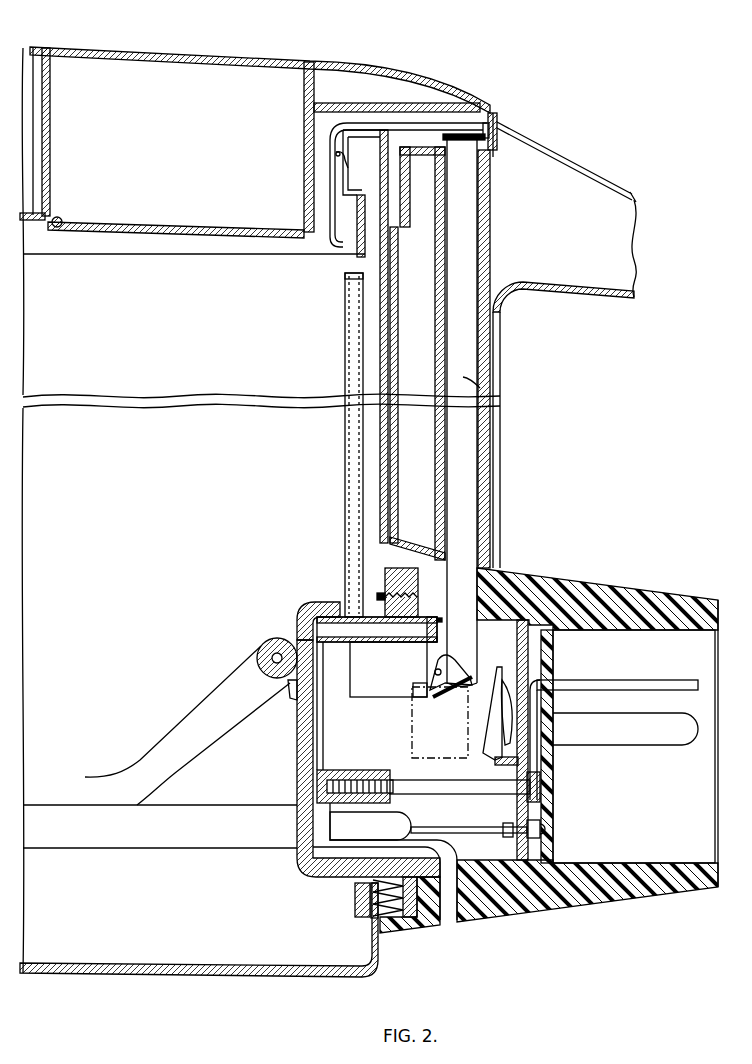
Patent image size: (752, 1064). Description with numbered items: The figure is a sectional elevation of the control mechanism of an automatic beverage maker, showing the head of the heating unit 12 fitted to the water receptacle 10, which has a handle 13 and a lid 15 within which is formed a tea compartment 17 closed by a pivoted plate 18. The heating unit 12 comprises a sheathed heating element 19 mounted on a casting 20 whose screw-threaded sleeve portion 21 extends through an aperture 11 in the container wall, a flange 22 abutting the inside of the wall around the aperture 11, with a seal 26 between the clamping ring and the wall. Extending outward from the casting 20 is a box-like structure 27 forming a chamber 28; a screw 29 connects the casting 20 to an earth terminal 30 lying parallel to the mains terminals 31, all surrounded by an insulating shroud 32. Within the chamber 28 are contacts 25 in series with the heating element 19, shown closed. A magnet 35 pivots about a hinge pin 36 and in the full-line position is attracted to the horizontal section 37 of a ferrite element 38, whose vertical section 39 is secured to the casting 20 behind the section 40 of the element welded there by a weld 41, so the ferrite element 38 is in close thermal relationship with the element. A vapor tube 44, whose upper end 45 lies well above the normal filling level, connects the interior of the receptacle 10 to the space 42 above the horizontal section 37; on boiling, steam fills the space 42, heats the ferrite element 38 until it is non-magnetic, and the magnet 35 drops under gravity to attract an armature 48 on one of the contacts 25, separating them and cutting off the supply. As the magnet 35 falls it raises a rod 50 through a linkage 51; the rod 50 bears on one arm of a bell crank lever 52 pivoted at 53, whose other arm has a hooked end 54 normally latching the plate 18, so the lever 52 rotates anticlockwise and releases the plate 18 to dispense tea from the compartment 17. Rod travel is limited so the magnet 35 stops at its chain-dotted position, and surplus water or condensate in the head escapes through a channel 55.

The water receptacle 10 is at (208, 968).
The aperture 11 is at (375, 887).
The heating unit 12 is at (440, 934).
The handle 13 is at (612, 200).
The lid 15 is at (35, 48).
The tea compartment 17 is at (230, 86).
The pivoted plate 18 is at (222, 232).
The heating element 19 is at (97, 838).
The casting 20 is at (307, 868).
The screw-threaded sleeve portion 21 is at (403, 918).
The flange 22 is at (362, 905).
The contacts 25 is at (413, 577).
The seal 26 is at (373, 918).
The box-like structure 27 is at (503, 576).
The chamber 28 is at (381, 746).
The screw 29 is at (428, 786).
The earth terminal 30 is at (673, 683).
The mains terminals 31 is at (617, 732).
The shroud 32 is at (638, 886).
The magnet 35 is at (396, 672).
The hinge pin 36 is at (432, 665).
The horizontal section 37 is at (380, 636).
The ferrite element 38 is at (333, 617).
The vertical section 39 is at (305, 622).
The section of heating element 40 is at (247, 677).
The weld 41 is at (293, 692).
The space 42 is at (400, 628).
The vapor tube 44 is at (345, 385).
The upper end 45 is at (356, 274).
The armature 48 is at (490, 738).
The rod 50 is at (466, 425).
The linkage 51 is at (448, 698).
The bell crank lever 52 is at (434, 128).
The pivot 53 is at (340, 158).
The hooked end 54 is at (328, 240).
The channel 55 is at (450, 904).